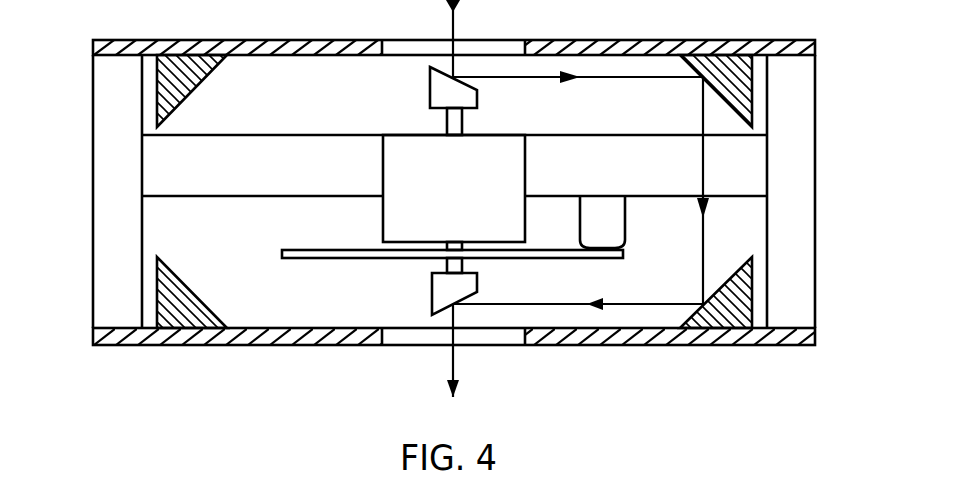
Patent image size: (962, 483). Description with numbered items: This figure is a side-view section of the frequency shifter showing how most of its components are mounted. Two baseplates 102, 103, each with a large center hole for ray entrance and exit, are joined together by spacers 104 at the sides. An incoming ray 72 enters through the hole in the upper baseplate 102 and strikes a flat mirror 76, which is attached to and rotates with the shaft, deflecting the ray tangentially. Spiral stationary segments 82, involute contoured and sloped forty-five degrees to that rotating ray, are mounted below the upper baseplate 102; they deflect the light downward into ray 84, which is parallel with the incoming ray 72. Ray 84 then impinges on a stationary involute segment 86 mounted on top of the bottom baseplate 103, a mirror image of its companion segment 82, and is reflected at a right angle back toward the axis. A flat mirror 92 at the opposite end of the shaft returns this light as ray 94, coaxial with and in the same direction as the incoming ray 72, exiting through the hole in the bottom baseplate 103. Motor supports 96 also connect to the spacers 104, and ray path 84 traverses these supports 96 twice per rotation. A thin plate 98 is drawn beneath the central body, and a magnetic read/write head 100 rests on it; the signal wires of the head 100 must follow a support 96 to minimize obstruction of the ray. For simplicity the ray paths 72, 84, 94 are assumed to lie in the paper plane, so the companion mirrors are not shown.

The incoming ray 72 is at (455, 25).
The flat mirror 76 is at (430, 88).
The spiral stationary segments 82 is at (188, 85).
The ray 84 is at (705, 240).
The stationary involute segments 86 is at (195, 300).
The flat mirror 92 is at (432, 300).
The ray 94 is at (458, 378).
The motor supports 96 is at (302, 188).
The mounting plate 98 is at (337, 255).
The magnetic read/write head 100 is at (618, 220).
The upper baseplate 102 is at (600, 42).
The bottom baseplate 103 is at (598, 343).
The spacers 104 is at (107, 159).